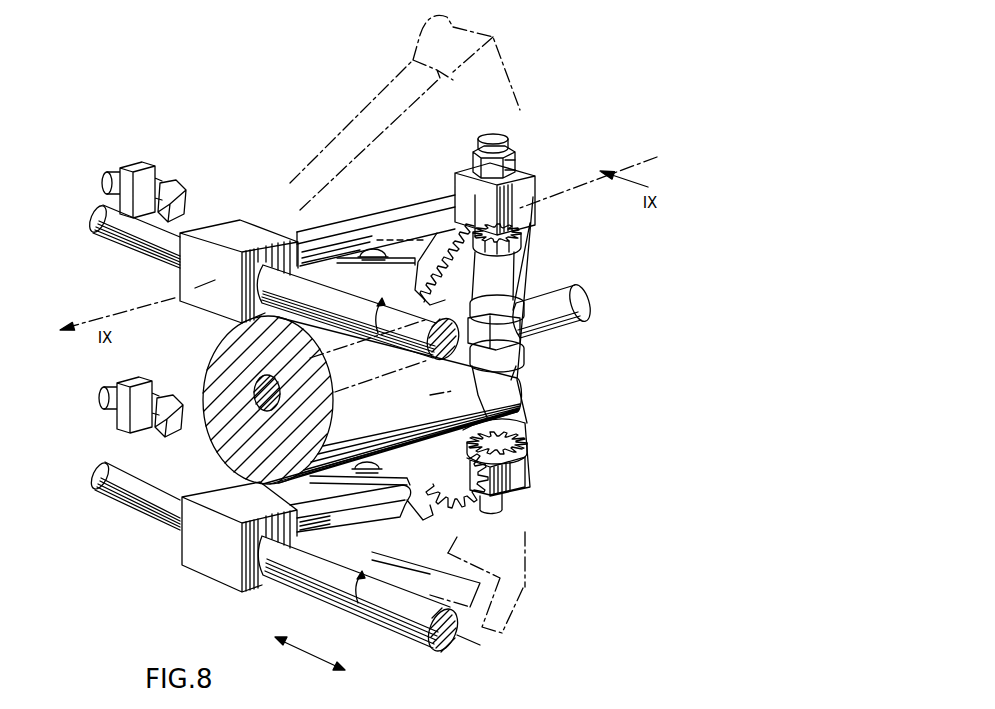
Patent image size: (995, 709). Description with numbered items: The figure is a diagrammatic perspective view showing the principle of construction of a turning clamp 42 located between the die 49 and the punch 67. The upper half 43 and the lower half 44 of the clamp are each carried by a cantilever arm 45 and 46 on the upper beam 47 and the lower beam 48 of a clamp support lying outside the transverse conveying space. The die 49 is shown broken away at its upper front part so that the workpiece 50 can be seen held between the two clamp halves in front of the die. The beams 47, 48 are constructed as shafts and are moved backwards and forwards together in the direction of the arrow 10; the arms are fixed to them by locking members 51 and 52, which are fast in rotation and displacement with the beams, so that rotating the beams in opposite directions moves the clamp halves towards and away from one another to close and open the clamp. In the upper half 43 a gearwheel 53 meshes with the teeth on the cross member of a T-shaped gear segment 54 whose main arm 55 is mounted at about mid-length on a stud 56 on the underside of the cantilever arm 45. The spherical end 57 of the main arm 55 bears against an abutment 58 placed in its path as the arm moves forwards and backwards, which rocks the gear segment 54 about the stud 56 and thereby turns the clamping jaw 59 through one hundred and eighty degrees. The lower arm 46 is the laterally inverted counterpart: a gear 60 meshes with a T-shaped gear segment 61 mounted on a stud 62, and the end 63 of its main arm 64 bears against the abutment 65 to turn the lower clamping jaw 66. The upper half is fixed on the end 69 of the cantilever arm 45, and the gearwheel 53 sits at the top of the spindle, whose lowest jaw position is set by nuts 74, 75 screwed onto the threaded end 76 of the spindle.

The arrow 10 is at (297, 648).
The turning clamp 42 is at (527, 141).
The upper half of the turning clamp 43 is at (546, 234).
The lower half of the turning clamp 44 is at (547, 434).
The cantilever arm 45 is at (358, 222).
The cantilever arm 46 is at (380, 504).
The upper beam 47 is at (126, 250).
The lower beam 48 is at (122, 495).
The die 49 is at (213, 348).
The workpiece 50 is at (488, 332).
The locking member 51 is at (238, 222).
The locking member 52 is at (195, 543).
The gearwheel 53 is at (520, 242).
The gear segment 54 is at (470, 266).
The main arm 55 is at (368, 260).
The stud 56 is at (387, 255).
The end of the main arm 57 is at (292, 236).
The abutment 58 is at (165, 200).
The clamping jaw 59 is at (518, 316).
The gear 60 is at (525, 455).
The gear segment 61 is at (456, 503).
The stud 62 is at (383, 469).
The end of the main arm 63 is at (245, 460).
The main arm 64 is at (345, 486).
The abutment 65 is at (170, 400).
The lower clamping jaw 66 is at (512, 352).
The punch 67 is at (584, 322).
The end of the cantilever arm 69 is at (523, 200).
The nut 74 is at (476, 162).
The nut 75 is at (517, 163).
The threaded end of the spindle 76 is at (490, 134).